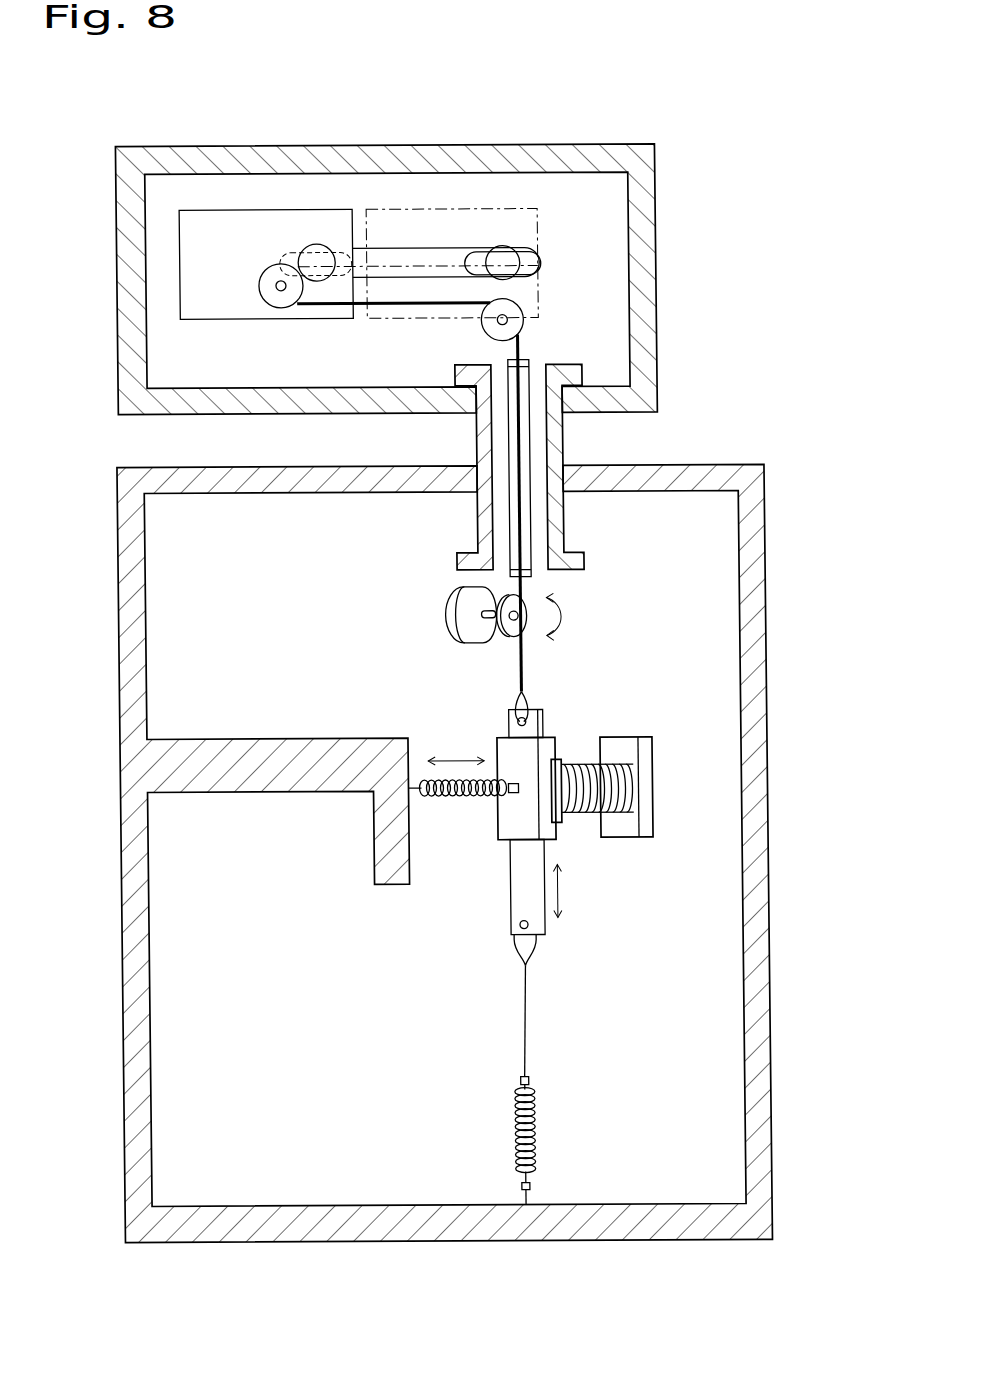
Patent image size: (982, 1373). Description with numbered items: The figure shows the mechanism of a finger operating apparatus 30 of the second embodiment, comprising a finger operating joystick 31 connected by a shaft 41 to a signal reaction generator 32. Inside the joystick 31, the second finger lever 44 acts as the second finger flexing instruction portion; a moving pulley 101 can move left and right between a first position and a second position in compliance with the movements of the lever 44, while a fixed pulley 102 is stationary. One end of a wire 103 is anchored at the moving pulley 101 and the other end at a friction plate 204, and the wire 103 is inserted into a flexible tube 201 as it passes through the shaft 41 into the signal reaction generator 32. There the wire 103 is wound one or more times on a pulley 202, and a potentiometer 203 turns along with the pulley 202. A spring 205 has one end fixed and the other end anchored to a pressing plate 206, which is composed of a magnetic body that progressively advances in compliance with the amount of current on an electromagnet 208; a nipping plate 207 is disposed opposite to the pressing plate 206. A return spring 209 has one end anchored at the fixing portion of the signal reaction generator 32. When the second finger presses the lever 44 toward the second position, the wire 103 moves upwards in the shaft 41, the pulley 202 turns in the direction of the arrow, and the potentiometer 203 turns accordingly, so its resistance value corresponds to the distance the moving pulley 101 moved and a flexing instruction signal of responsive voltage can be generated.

The finger operating apparatus 30 is at (637, 118).
The finger operating joystick 31 is at (537, 146).
The signal reaction generator 32 is at (720, 466).
The shaft 41 is at (563, 440).
The second finger lever 44 is at (244, 210).
The moving pulley 101 is at (319, 257).
The fixed pulley 102 is at (276, 296).
The wire 103 is at (410, 305).
The flexible tube 201 is at (529, 572).
The pulley 202 is at (501, 640).
The potentiometer 203 is at (445, 620).
The friction plate 204 is at (535, 718).
The spring 205 is at (451, 802).
The pressing plate 206 is at (502, 823).
The nipping plate 207 is at (549, 812).
The electromagnet 208 is at (607, 788).
The return spring 209 is at (526, 1142).